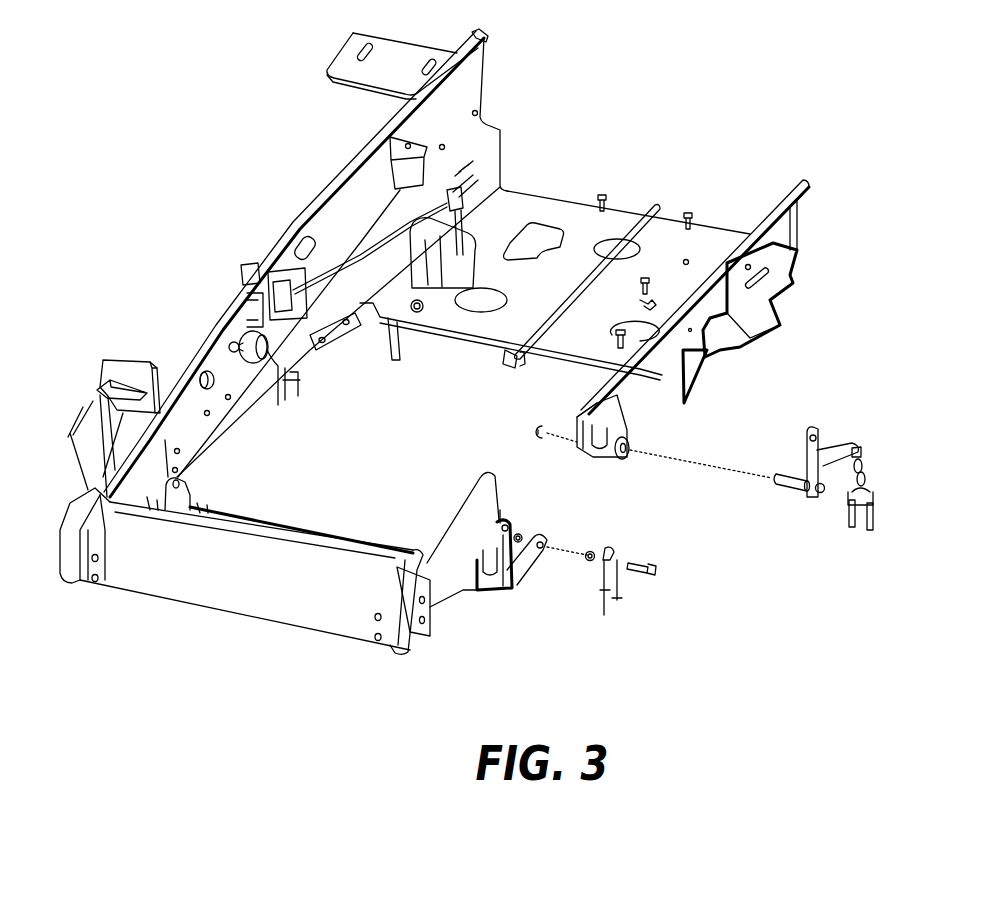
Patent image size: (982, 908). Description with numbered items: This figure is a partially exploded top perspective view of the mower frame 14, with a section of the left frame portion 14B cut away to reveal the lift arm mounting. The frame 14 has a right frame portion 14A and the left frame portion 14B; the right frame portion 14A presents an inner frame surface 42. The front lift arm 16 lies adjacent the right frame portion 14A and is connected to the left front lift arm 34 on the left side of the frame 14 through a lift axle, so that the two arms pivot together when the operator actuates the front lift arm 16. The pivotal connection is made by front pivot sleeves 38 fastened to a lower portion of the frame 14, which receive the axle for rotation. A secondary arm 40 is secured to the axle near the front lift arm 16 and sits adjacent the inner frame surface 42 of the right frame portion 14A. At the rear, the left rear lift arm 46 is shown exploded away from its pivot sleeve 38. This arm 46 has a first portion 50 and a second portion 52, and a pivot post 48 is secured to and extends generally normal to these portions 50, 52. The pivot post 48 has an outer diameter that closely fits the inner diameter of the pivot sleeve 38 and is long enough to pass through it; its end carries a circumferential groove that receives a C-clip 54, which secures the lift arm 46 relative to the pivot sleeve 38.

The frame 14 is at (317, 197).
The right frame portion 14A is at (212, 330).
The left frame portion 14B is at (763, 223).
The front lift arm 16 is at (85, 427).
The left front lift arm 34 is at (527, 563).
The front pivot sleeves 38 is at (593, 458).
The secondary arm 40 is at (190, 493).
The inner frame surface 42 is at (188, 413).
The left rear lift arm 46 is at (817, 447).
The pivot post 48 is at (790, 487).
The first portion 50 is at (833, 470).
The second portion 52 is at (807, 457).
The C-clip 54 is at (537, 431).